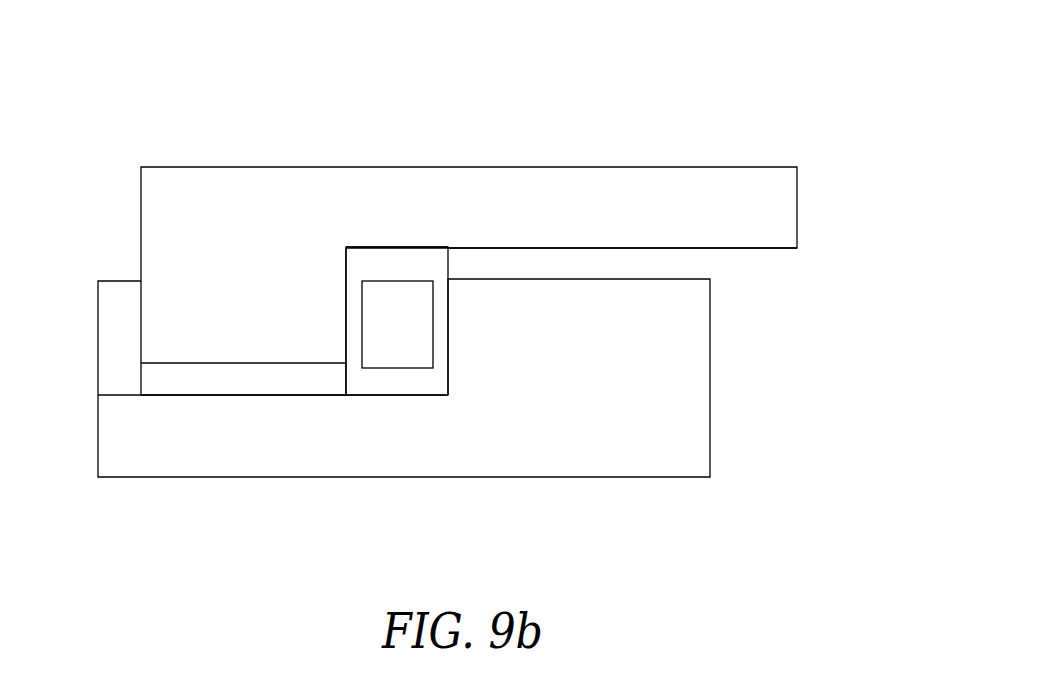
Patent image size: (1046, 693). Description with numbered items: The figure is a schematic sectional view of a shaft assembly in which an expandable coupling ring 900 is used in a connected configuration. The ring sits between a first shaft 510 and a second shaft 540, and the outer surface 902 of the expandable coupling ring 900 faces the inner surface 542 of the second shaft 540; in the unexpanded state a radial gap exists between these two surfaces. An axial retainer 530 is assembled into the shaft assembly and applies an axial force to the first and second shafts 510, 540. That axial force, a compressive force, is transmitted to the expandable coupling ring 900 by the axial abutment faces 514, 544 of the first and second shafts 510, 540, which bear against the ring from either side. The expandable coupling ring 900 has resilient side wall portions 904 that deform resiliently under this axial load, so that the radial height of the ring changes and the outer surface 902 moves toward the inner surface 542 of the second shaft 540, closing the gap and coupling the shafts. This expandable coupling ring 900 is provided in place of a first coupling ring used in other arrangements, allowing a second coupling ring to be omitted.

The first shaft 510 is at (710, 437).
The axial abutment face 514 is at (443, 293).
The axial retainer 530 is at (120, 280).
The second shaft 540 is at (235, 166).
The inner surface 542 is at (587, 248).
The axial abutment face 544 is at (346, 277).
The expandable coupling ring 900 is at (393, 380).
The outer surface 902 is at (422, 247).
The resilient side wall portions 904 is at (362, 345).